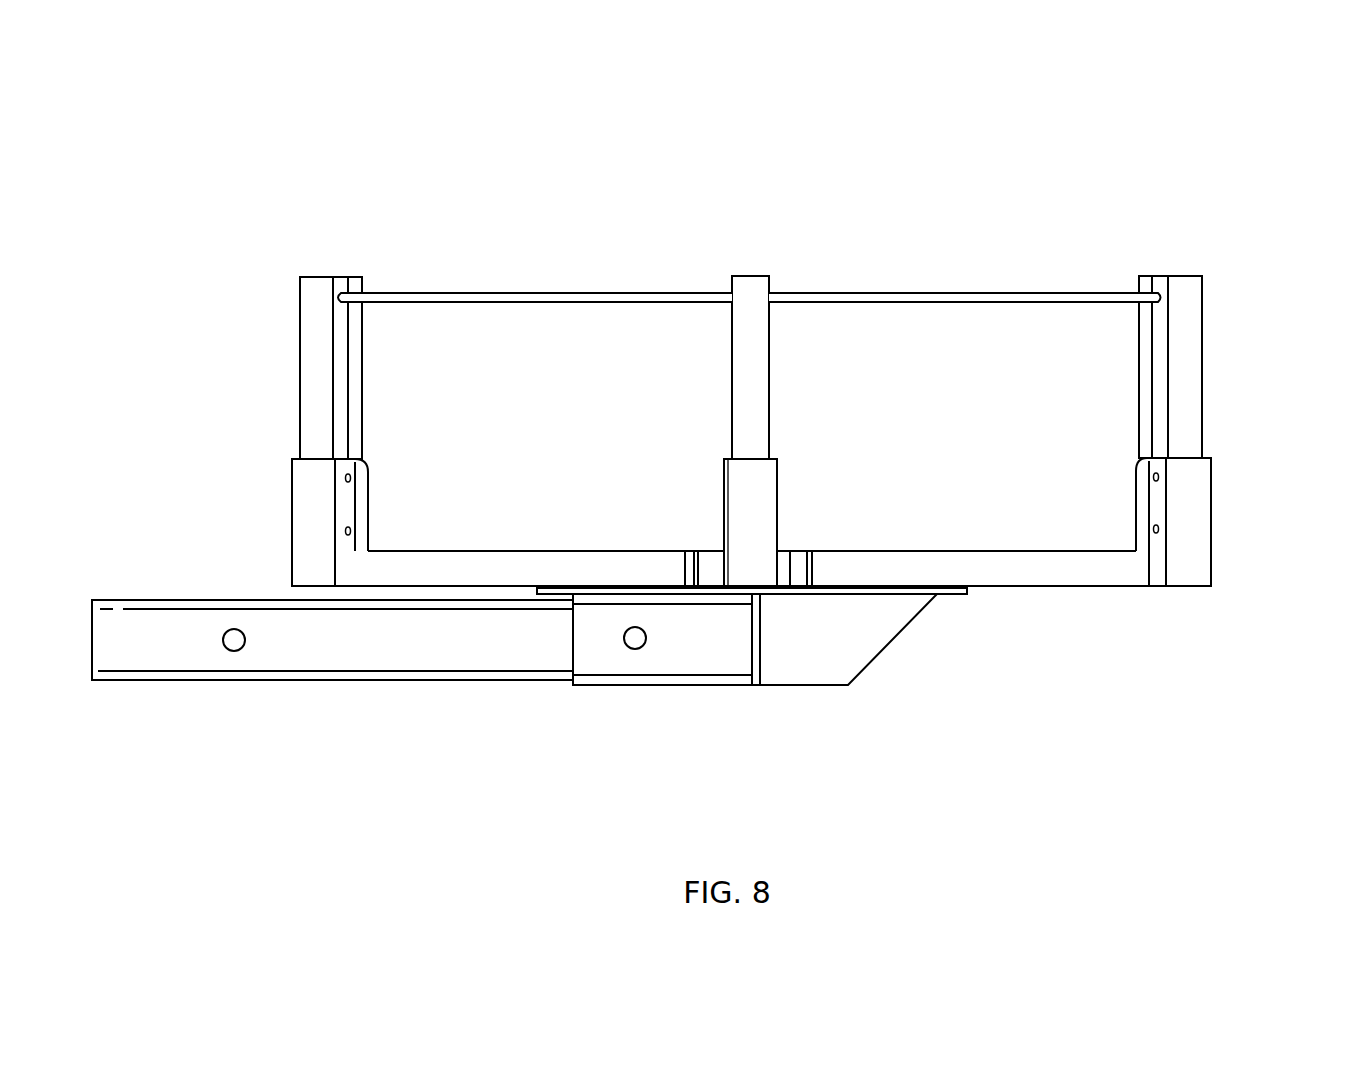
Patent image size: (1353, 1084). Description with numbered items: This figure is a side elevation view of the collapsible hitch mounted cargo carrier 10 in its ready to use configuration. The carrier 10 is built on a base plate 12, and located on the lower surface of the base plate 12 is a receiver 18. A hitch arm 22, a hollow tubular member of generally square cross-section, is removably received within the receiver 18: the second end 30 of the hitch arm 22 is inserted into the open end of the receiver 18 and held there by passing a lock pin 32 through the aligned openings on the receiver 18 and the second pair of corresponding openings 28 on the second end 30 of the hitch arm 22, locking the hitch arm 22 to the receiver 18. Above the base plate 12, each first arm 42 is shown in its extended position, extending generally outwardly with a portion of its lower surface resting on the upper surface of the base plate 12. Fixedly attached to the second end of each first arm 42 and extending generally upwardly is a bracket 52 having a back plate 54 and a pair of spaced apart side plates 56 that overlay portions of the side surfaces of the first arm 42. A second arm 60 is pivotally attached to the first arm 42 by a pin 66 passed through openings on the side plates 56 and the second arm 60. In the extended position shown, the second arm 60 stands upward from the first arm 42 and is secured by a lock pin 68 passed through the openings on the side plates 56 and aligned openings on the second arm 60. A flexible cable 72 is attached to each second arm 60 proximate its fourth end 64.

The collapsible hitch mounted cargo carrier 10 is at (404, 180).
The base plate 12 is at (956, 644).
The receiver 18 is at (750, 688).
The hitch arm 22 is at (314, 698).
The second pair of corresponding openings 28 is at (234, 652).
The second end 30 is at (110, 658).
The lock pin 32 is at (635, 650).
The first arm 42 is at (1040, 618).
The bracket 52 is at (750, 524).
The back plate 54 is at (1200, 486).
The side plates 56 is at (1158, 563).
The second arm 60 is at (275, 391).
The fourth end 64 is at (1193, 286).
The pin 66 is at (1152, 529).
The lock pin 68 is at (1152, 477).
The flexible cable 72 is at (995, 295).